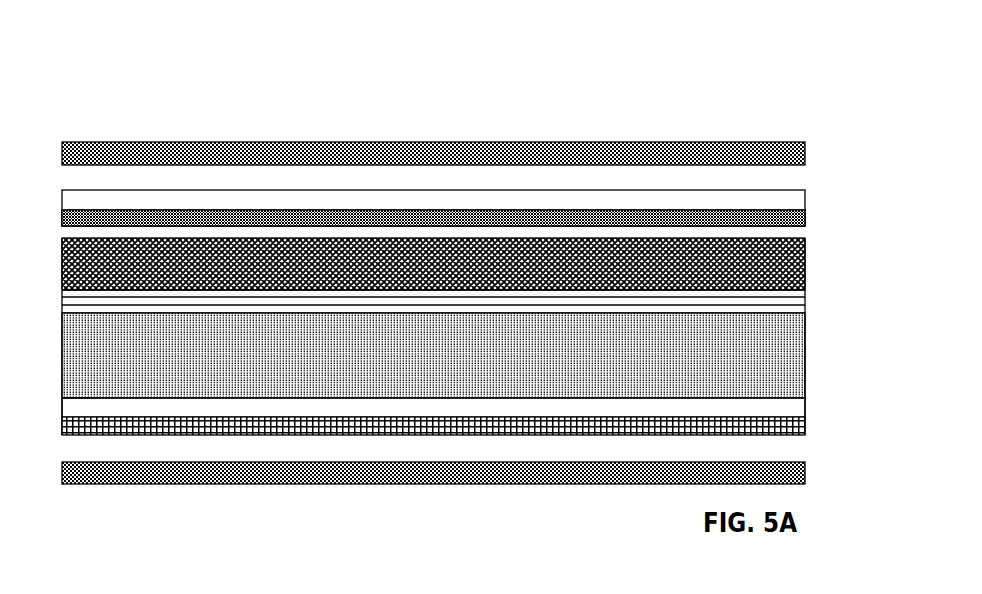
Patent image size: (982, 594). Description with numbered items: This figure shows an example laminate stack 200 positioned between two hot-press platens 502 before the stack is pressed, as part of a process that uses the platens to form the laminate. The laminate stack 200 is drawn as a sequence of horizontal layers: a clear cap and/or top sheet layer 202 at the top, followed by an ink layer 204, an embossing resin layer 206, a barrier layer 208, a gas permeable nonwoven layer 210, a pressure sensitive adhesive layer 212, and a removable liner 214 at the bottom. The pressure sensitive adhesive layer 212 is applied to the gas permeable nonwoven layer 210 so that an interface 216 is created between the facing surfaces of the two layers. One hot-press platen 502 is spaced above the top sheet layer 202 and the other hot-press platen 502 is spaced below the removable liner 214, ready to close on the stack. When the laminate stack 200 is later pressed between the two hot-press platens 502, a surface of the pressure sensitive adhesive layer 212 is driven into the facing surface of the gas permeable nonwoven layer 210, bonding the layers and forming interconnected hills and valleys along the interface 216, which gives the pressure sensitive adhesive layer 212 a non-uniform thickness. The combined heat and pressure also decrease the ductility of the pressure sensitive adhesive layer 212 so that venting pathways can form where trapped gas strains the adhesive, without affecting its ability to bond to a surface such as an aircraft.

The laminate stack 200 is at (155, 90).
The clear cap and/or top sheet layer 202 is at (805, 204).
The ink layer 204 is at (805, 216).
The embossing resin layer 206 is at (805, 272).
The barrier layer 208 is at (805, 310).
The gas permeable nonwoven layer 210 is at (805, 378).
The pressure sensitive adhesive layer 212 is at (805, 412).
The removable liner 214 is at (805, 425).
The interface 216 is at (82, 393).
The hot-press platens 502 is at (805, 147).